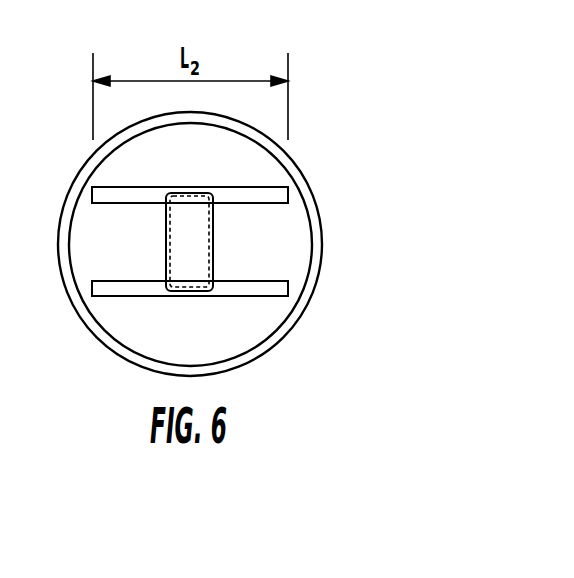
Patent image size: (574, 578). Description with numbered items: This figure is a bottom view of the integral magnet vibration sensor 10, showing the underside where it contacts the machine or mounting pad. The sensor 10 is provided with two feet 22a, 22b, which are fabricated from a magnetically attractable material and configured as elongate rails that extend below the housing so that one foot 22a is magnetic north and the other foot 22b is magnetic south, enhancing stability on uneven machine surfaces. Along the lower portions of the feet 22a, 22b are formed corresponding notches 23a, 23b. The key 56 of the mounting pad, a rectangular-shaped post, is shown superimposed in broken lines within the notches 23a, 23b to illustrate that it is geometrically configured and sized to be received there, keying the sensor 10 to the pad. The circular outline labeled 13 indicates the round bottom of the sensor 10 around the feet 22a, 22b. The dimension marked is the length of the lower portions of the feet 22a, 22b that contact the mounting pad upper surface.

The sensor 10 is at (323, 173).
The interior of housing 13 is at (280, 242).
The foot 22a is at (118, 187).
The foot 22b is at (120, 296).
The notch 23a is at (168, 203).
The notch 23b is at (168, 280).
The key 56 is at (200, 245).